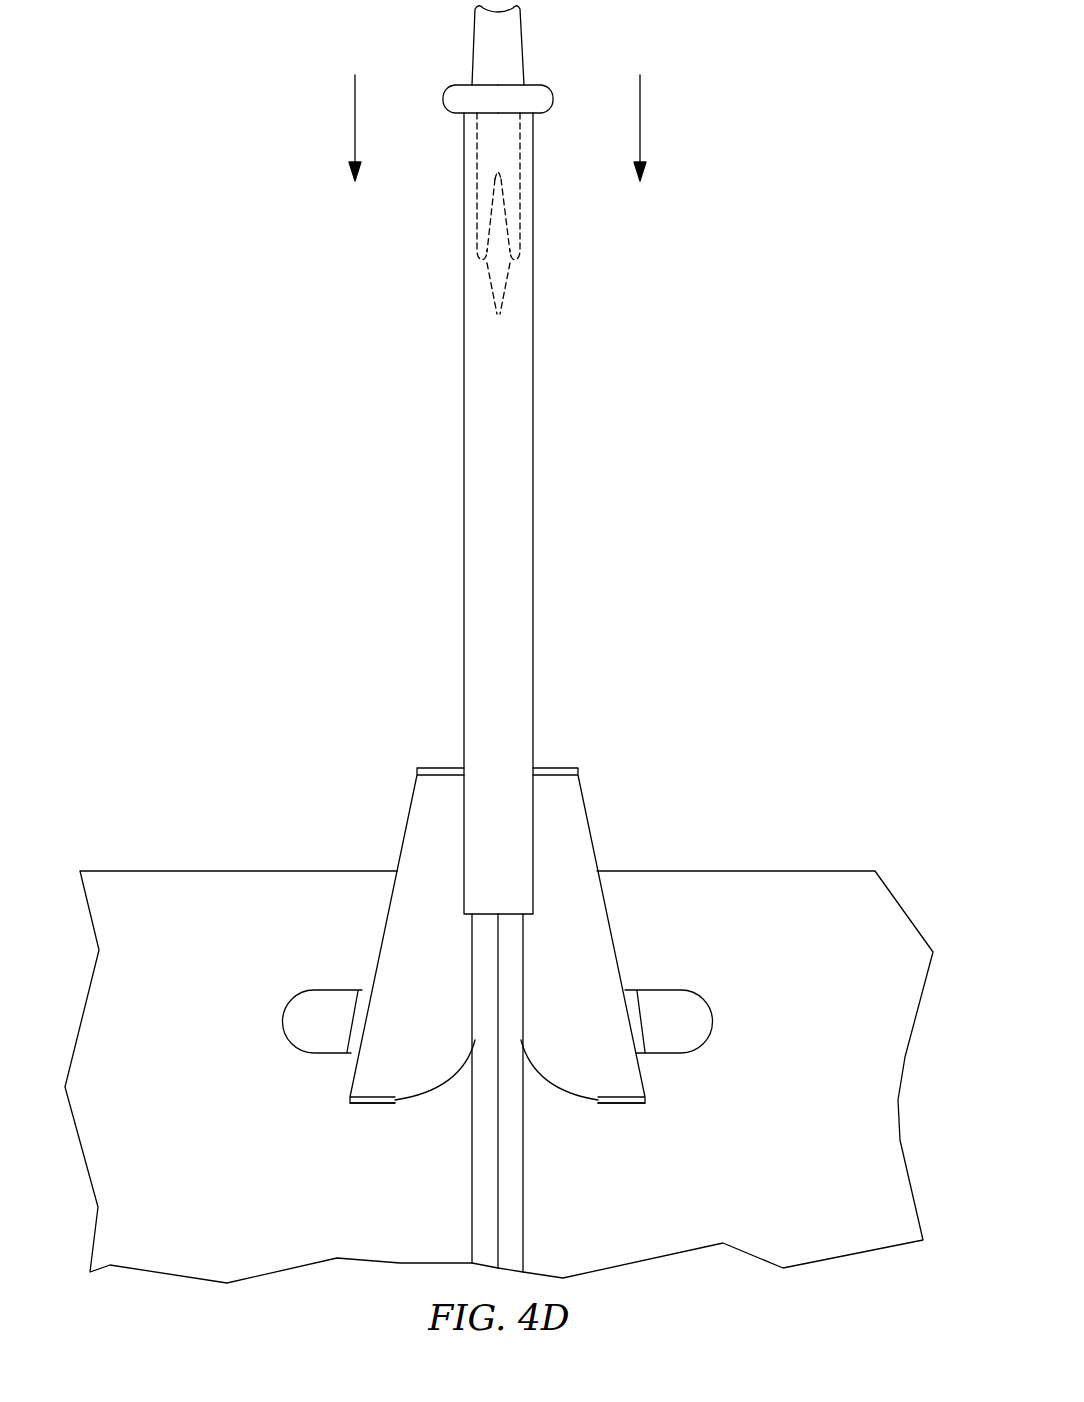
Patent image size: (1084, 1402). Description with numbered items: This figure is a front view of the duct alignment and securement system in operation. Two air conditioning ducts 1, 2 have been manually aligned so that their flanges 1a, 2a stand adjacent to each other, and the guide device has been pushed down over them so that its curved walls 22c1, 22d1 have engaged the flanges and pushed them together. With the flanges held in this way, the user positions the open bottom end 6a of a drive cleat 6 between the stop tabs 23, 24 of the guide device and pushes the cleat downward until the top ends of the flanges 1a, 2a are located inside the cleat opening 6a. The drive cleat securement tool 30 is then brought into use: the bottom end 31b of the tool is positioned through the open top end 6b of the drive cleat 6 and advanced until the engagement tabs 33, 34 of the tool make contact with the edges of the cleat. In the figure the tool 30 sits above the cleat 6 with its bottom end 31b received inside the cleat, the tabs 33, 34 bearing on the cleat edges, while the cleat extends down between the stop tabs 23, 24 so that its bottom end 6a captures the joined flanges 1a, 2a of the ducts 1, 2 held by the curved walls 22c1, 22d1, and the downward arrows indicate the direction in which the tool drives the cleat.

The drive cleat securement tool 30 is at (440, 45).
The engagement tab 33 is at (443, 99).
The engagement tab 34 is at (553, 100).
The drive cleat 6 is at (509, 551).
The open bottom end of drive cleat 6a is at (488, 916).
The open top end of drive cleat 6b is at (535, 116).
The bottom end of tool 31b is at (502, 260).
The stop tab 23 is at (437, 768).
The stop tab 24 is at (557, 768).
The curved wall 22c1 is at (437, 1083).
The curved wall 22d1 is at (557, 1083).
The air conditioning duct 1 is at (193, 1181).
The air conditioning duct 2 is at (778, 1168).
The flange 1a is at (478, 1005).
The flange 2a is at (515, 1003).